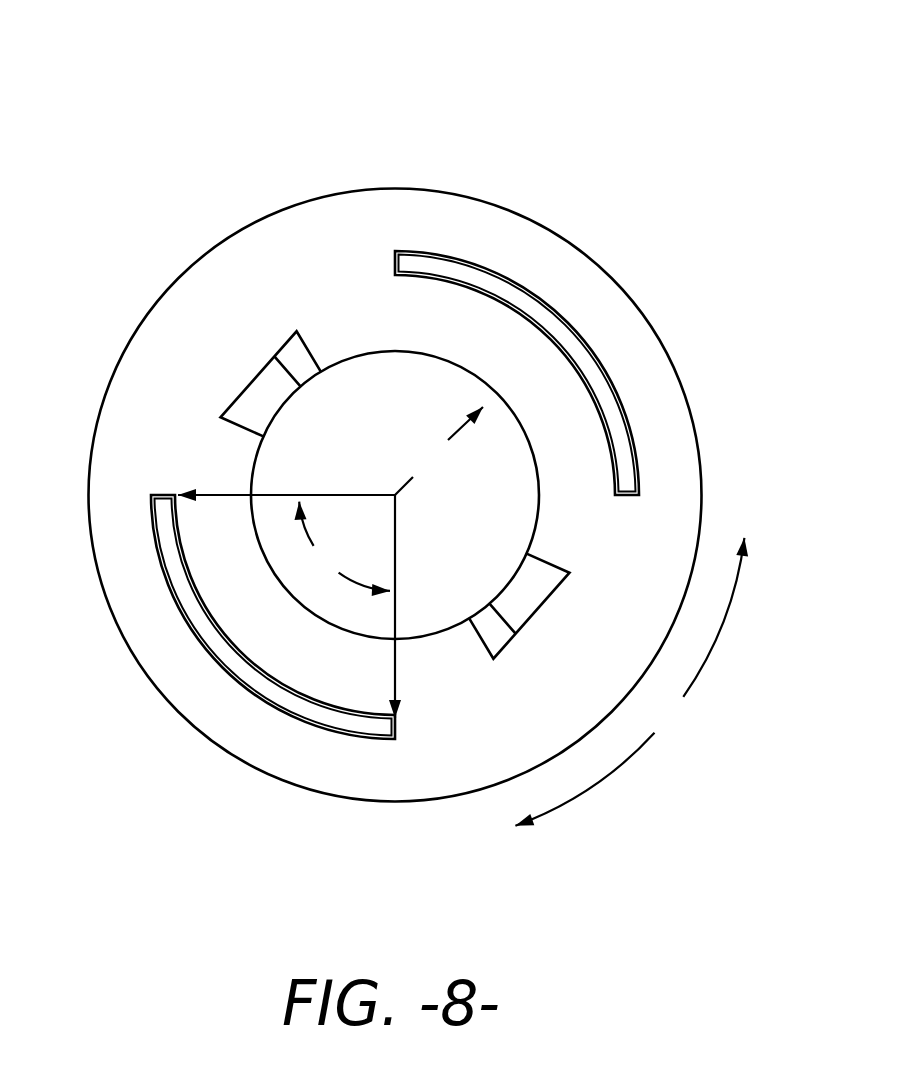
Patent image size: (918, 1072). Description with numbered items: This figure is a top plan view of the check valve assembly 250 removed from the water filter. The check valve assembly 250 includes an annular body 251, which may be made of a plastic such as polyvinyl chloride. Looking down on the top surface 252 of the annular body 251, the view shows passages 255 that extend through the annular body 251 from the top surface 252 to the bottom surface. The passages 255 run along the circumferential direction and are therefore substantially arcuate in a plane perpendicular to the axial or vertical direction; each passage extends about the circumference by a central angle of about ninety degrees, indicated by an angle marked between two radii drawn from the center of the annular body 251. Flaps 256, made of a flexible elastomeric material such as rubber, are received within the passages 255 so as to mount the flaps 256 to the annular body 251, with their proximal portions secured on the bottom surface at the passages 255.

The check valve assembly 250 is at (712, 185).
The annular body 251 is at (455, 775).
The top surface 252 is at (173, 338).
The passages 255 is at (396, 487).
The flaps 256 is at (625, 420).